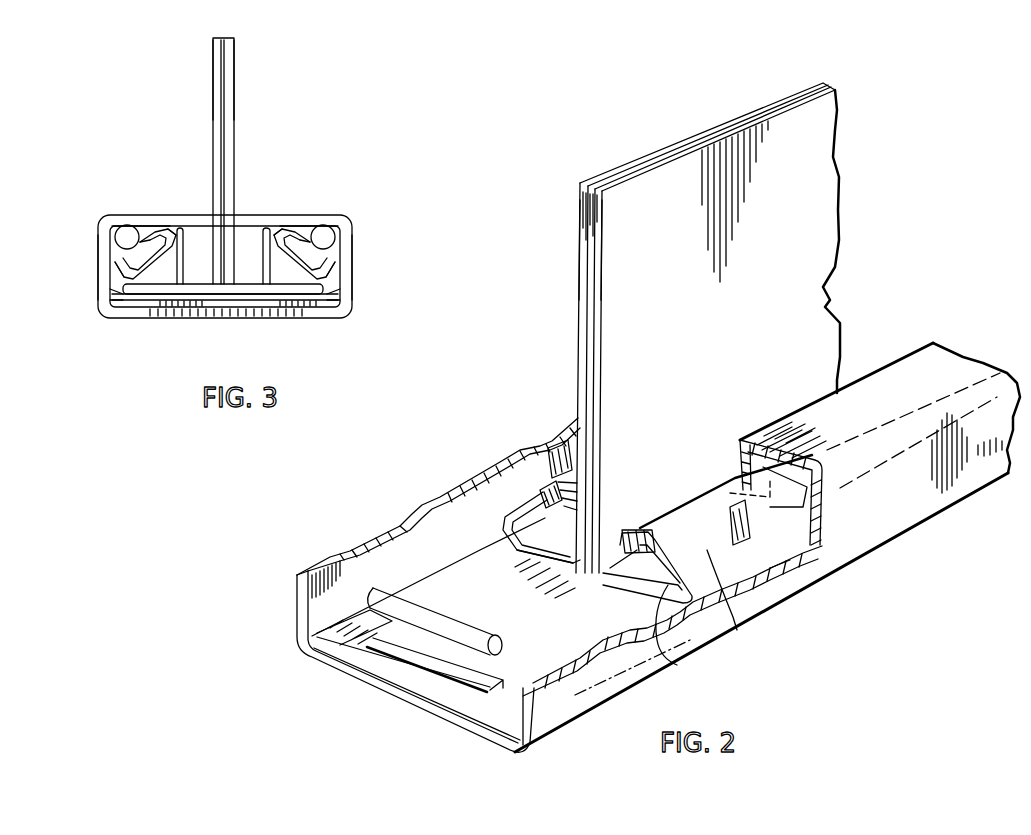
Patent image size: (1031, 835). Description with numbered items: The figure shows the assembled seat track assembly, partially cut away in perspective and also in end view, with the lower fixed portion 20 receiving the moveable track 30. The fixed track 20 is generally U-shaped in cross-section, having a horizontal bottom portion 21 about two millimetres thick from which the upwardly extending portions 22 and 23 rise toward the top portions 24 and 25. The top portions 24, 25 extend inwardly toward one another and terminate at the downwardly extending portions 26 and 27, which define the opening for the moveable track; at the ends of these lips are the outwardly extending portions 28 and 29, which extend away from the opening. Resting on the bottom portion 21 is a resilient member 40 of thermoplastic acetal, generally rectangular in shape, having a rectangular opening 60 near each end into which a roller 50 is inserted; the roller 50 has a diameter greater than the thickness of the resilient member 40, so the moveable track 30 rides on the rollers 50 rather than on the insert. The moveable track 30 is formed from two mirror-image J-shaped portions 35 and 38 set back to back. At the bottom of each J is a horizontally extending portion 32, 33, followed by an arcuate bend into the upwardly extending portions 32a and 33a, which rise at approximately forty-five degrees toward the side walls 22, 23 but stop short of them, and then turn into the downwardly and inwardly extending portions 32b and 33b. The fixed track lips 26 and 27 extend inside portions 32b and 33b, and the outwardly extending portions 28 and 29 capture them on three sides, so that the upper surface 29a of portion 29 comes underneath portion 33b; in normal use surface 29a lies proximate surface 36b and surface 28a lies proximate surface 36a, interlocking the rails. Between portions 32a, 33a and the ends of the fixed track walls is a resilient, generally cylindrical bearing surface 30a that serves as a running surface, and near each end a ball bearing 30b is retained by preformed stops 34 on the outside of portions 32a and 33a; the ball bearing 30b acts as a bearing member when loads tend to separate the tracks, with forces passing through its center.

In FIG. 3, the lower fixed portion 20 is at (170, 318).
In FIG. 2, the lower fixed portion 20 is at (907, 512).
In FIG. 3, the bottom portion 21 is at (270, 312).
In FIG. 3, the upwardly extending portion 22 is at (343, 299).
In FIG. 3, the upwardly extending portion 23 is at (98, 255).
In FIG. 3, the top portion 24 is at (112, 220).
In FIG. 3, the top portion 25 is at (325, 218).
In FIG. 3, the downwardly extending portion 26 is at (183, 228).
In FIG. 3, the downwardly extending portion 27 is at (263, 228).
In FIG. 3, the outwardly extending portion 28 is at (150, 288).
In FIG. 3, the surface 28a is at (100, 305).
In FIG. 3, the outwardly extending portion 29 is at (323, 300).
In FIG. 2, the outwardly extending portion 29 is at (723, 500).
In FIG. 3, the upper surface 29a is at (333, 305).
In FIG. 2, the upper surface 29a is at (735, 500).
In FIG. 3, the moveable track 30 is at (221, 117).
In FIG. 2, the moveable track 30 is at (807, 260).
In FIG. 2, the bearing surface 30a is at (782, 575).
In FIG. 3, the ball bearing 30b is at (115, 235).
In FIG. 3, the horizontally extending portion 32 is at (155, 280).
In FIG. 2, the horizontally extending portion 32 is at (540, 555).
In FIG. 3, the upwardly extending portion 32a is at (155, 223).
In FIG. 2, the upwardly extending portion 32a is at (540, 492).
In FIG. 3, the downwardly and inwardly extending portion 32b is at (168, 226).
In FIG. 2, the downwardly and inwardly extending portion 32b is at (545, 480).
In FIG. 3, the horizontally extending portion 33 is at (283, 292).
In FIG. 2, the horizontally extending portion 33 is at (623, 588).
In FIG. 3, the upwardly extending portion 33a is at (333, 257).
In FIG. 2, the upwardly extending portion 33a is at (677, 663).
In FIG. 3, the downwardly and inwardly extending portion 33b is at (285, 223).
In FIG. 2, the downwardly and inwardly extending portion 33b is at (637, 530).
In FIG. 2, the preformed stop 34 is at (735, 608).
In FIG. 3, the J-shaped portion 35 is at (212, 56).
In FIG. 2, the J-shaped portion 35 is at (580, 243).
In FIG. 3, the surface 36a is at (110, 290).
In FIG. 3, the surface 36b is at (320, 273).
In FIG. 3, the J-shaped portion 38 is at (234, 67).
In FIG. 2, the J-shaped portion 38 is at (600, 253).
In FIG. 3, the resilient member 40 is at (215, 300).
In FIG. 2, the resilient member 40 is at (503, 700).
In FIG. 3, the roller 50 is at (217, 300).
In FIG. 2, the roller 50 is at (420, 620).
In FIG. 2, the rectangular opening 60 is at (440, 660).